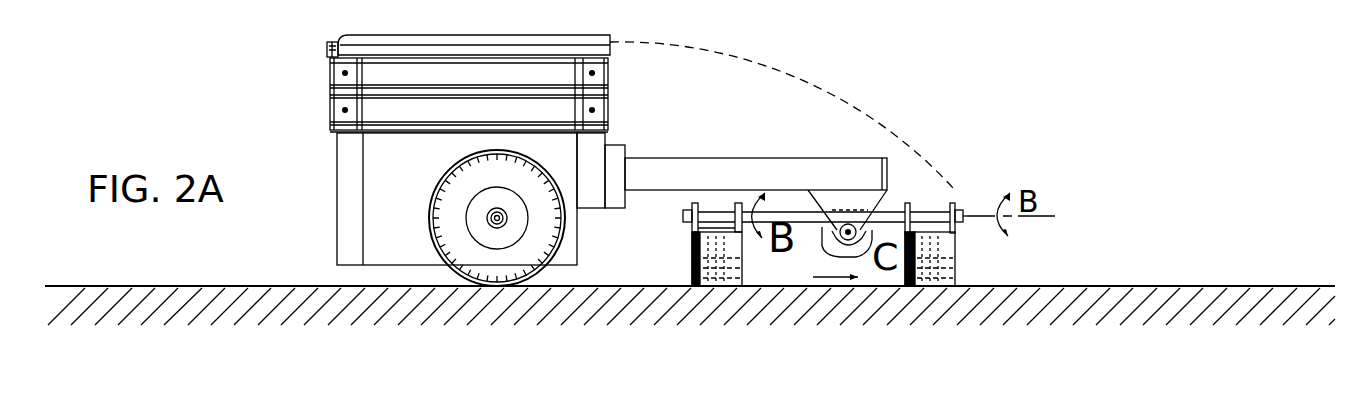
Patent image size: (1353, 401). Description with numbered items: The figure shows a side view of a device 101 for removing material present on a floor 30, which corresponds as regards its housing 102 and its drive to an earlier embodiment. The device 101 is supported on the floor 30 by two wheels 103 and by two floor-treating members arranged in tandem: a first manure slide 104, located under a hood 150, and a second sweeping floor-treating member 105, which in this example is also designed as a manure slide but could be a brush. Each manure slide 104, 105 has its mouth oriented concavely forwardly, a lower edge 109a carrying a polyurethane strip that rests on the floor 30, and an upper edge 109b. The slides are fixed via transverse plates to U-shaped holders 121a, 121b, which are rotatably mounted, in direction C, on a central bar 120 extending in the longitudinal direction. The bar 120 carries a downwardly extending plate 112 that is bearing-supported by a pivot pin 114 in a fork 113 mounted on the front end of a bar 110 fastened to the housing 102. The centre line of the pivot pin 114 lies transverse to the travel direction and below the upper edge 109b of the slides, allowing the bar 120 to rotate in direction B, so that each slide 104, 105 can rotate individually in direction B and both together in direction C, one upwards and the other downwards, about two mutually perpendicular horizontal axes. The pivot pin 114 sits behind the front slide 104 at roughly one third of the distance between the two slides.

The ground surface 30 is at (1197, 287).
The device 101 is at (313, 100).
The housing 102 is at (437, 173).
The wheels 103 is at (457, 243).
The manure slide 104 is at (933, 268).
The second sweeping floor-treating member 105 is at (692, 278).
The lower edge 109a is at (725, 232).
The upper edge 109b is at (692, 255).
The bar 110 is at (717, 165).
The downwardly extending plate 112 is at (877, 230).
The fork 113 is at (846, 213).
The pivot pin 114 is at (830, 233).
The central bar 120 is at (787, 215).
The U-shaped holder 121a is at (943, 228).
The U-shaped holder 121b is at (702, 232).
The hood 150 is at (800, 80).